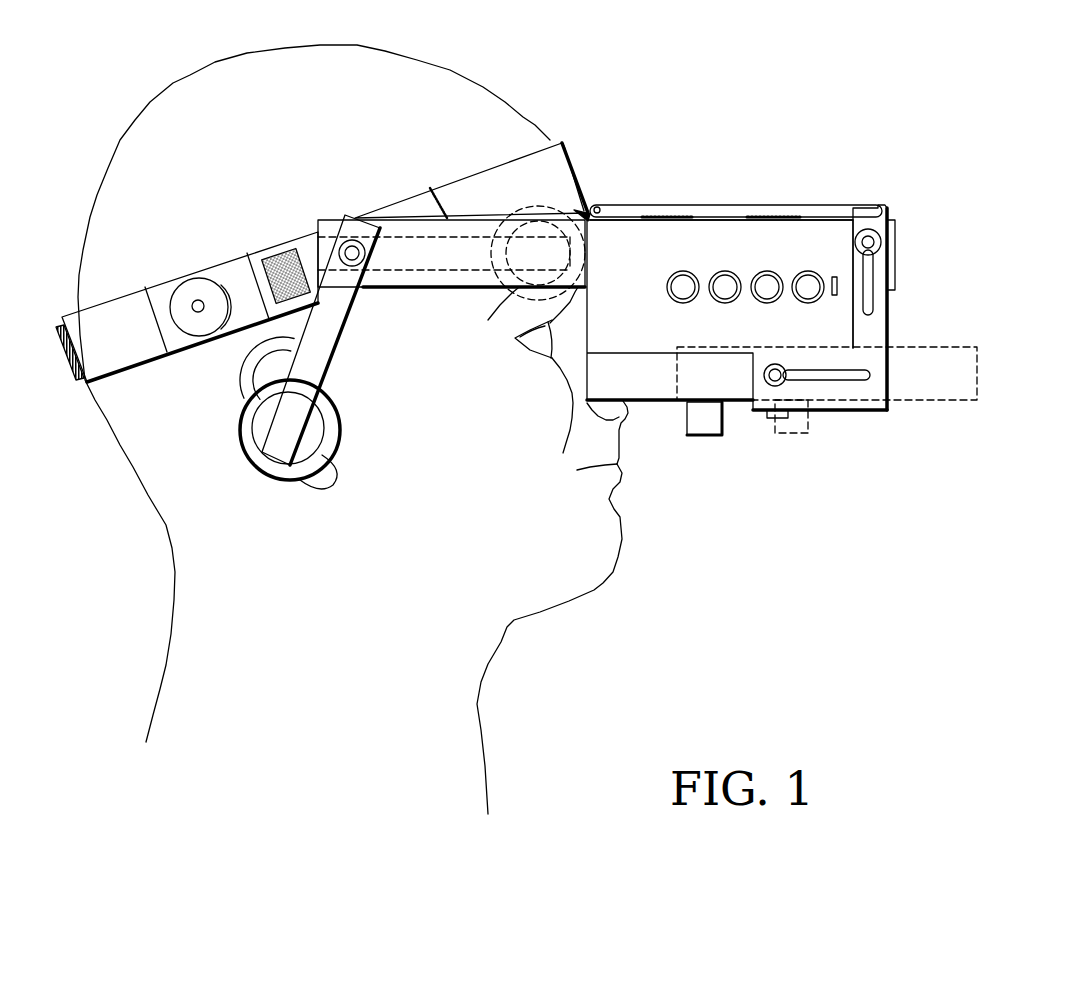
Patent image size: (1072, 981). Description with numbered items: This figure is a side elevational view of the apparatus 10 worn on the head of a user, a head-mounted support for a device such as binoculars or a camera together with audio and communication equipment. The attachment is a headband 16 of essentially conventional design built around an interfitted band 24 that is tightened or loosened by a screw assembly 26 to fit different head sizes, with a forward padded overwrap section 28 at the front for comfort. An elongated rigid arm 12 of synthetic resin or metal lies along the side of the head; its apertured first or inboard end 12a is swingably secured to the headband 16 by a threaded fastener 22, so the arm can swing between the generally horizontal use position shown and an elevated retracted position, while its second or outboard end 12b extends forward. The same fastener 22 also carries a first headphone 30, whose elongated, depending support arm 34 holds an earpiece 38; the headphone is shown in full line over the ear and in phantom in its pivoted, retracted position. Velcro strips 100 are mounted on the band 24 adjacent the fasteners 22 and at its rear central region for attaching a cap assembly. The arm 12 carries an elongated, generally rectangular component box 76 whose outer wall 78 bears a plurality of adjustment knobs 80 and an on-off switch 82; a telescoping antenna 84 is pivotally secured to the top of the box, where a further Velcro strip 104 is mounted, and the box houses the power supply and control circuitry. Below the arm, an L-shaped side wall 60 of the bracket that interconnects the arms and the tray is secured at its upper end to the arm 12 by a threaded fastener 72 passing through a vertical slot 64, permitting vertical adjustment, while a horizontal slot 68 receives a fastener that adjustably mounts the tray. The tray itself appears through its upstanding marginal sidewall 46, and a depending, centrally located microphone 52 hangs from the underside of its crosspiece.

The apparatus 10 is at (786, 120).
The elongated arm 12 is at (414, 172).
The first or inboard end 12a is at (330, 223).
The second or outboard end 12b is at (896, 258).
The headband 16 is at (606, 150).
The threaded fastener 22 is at (363, 280).
The interfitted band 24 is at (110, 313).
The screw assembly 26 is at (182, 343).
The forward padded overwrap section 28 is at (563, 162).
The first headphone 30 is at (330, 330).
The support arm 34 is at (297, 430).
The earpiece 38 is at (253, 450).
The upstanding marginal sidewall 46 is at (965, 373).
The microphone 52 is at (703, 428).
The side wall of bracket 60 is at (876, 332).
The vertical slot 64 is at (876, 285).
The horizontal slot 68 is at (820, 380).
The threaded fastener 72 is at (891, 222).
The component box 76 is at (817, 225).
The outer wall 78 is at (630, 233).
The adjustment knobs 80 is at (668, 287).
The on-off switch 82 is at (837, 278).
The telescoping antenna 84 is at (728, 212).
The Velcro strips 100 is at (273, 260).
The Velcro strip 104 is at (680, 217).